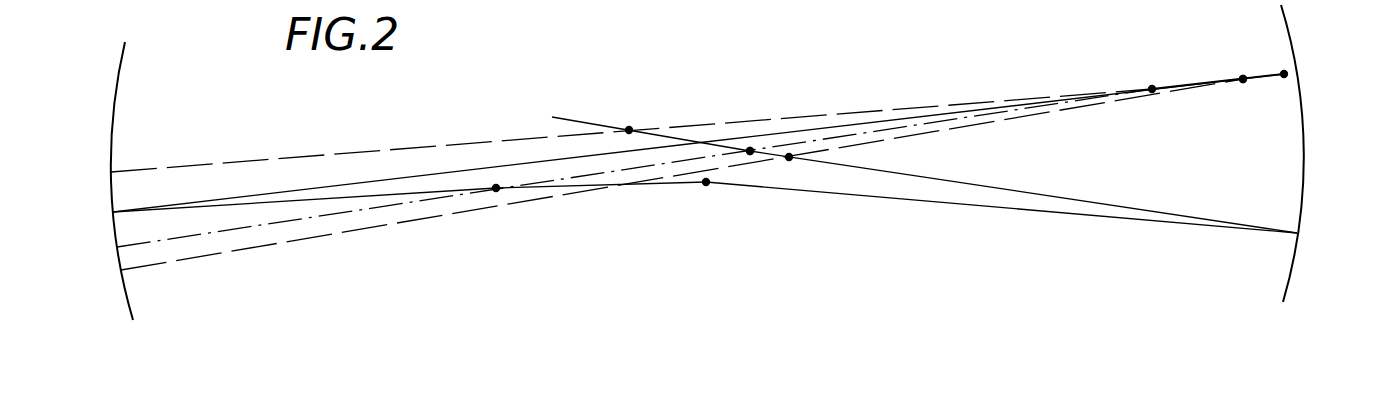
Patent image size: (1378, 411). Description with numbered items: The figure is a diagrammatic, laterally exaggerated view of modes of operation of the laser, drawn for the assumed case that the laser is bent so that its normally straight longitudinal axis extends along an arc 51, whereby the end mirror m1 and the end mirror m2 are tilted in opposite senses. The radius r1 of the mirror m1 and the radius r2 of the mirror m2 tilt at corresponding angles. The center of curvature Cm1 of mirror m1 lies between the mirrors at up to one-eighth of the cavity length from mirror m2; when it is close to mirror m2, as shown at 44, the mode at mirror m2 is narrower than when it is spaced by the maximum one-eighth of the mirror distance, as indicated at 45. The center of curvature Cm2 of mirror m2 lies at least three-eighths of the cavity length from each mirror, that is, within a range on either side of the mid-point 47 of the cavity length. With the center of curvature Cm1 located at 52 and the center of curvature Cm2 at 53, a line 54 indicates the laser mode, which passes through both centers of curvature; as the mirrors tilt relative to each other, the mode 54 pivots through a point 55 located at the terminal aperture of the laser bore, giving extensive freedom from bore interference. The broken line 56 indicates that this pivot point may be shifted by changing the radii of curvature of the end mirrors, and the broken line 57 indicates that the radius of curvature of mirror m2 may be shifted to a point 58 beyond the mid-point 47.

The end mirror m1 is at (140, 56).
The end mirror m2 is at (1304, 130).
The radius of mirror m1 r1 is at (495, 166).
The radius of mirror m2 r2 is at (1073, 199).
The center of curvature of mirror m1 Cm1 is at (1243, 76).
The center of curvature of mirror m2 Cm2 is at (752, 149).
The position of center of curvature close to mirror m2 44 is at (1286, 72).
The position of center of curvature spaced from mirror m2 45 is at (1150, 87).
The mid-point of cavity length 47 is at (707, 185).
The arc 51 is at (840, 191).
The location of center of curvature cm1 52 is at (1243, 83).
The location of center of curvature cm2 53 is at (749, 148).
The mode line 54 is at (603, 174).
The pivot point 55 is at (497, 191).
The broken line 56 is at (470, 212).
The broken line 57 is at (415, 145).
The point beyond mid-point 58 is at (650, 100).